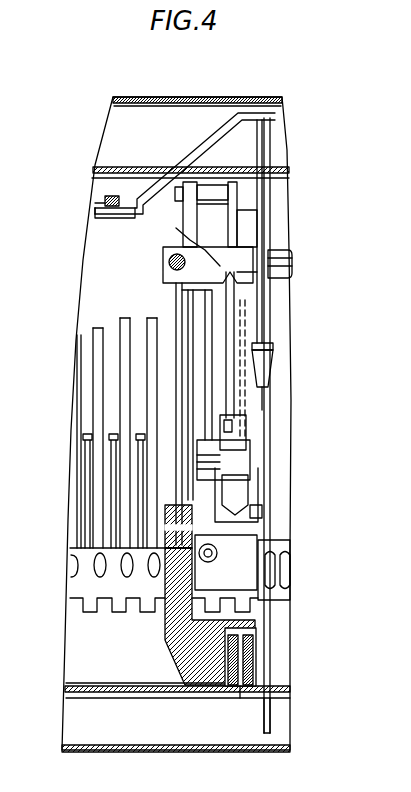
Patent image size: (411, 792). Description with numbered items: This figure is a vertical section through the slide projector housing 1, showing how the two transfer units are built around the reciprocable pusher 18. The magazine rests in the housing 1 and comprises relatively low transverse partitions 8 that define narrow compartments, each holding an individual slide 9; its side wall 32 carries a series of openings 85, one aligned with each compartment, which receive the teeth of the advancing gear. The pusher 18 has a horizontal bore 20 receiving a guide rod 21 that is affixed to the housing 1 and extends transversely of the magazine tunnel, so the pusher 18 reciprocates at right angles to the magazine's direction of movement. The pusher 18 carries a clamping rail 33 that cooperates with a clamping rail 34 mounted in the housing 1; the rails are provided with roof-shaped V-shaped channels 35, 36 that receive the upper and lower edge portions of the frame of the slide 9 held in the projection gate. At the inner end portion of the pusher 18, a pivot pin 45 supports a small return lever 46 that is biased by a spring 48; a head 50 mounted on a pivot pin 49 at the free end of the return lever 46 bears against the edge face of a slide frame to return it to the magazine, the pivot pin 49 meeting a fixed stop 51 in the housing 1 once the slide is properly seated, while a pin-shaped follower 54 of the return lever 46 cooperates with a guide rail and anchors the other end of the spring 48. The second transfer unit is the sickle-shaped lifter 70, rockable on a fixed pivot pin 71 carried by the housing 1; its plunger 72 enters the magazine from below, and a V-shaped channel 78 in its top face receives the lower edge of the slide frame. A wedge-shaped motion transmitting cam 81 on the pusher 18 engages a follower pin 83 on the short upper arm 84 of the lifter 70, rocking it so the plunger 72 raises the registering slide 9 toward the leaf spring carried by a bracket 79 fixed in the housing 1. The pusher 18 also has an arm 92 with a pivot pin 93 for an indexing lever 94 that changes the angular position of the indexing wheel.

The housing 1 is at (113, 132).
The transverse partitions 8 is at (214, 128).
The slide 9 is at (267, 140).
The bracket 79 is at (95, 210).
The motion transmitting cam 81 is at (190, 186).
The follower pin 83 is at (213, 192).
The upper arm 84 is at (237, 208).
The pivot pin 71 is at (280, 250).
The V-shaped channel 35 is at (176, 228).
The horizontal bore 20 is at (163, 252).
The guide rod 21 is at (168, 265).
The clamping rail 33 is at (258, 272).
The pusher 18 is at (165, 300).
The V-shaped channel 78 is at (273, 347).
The plunger 72 is at (271, 372).
The head 50 is at (246, 410).
The pivot pin 49 is at (232, 434).
The fixed stop 51 is at (246, 470).
The return lever 46 is at (236, 494).
The V-shaped channel 36 is at (262, 511).
The pivot pin 45 is at (192, 514).
The follower 54 is at (217, 552).
The openings 85 is at (100, 565).
The clamping rail 34 is at (272, 562).
The side wall 32 is at (75, 575).
The spring 48 is at (212, 560).
The arm 92 is at (172, 665).
The indexing lever 94 is at (250, 660).
The pivot pin 93 is at (240, 692).
The lifter 70 is at (272, 712).